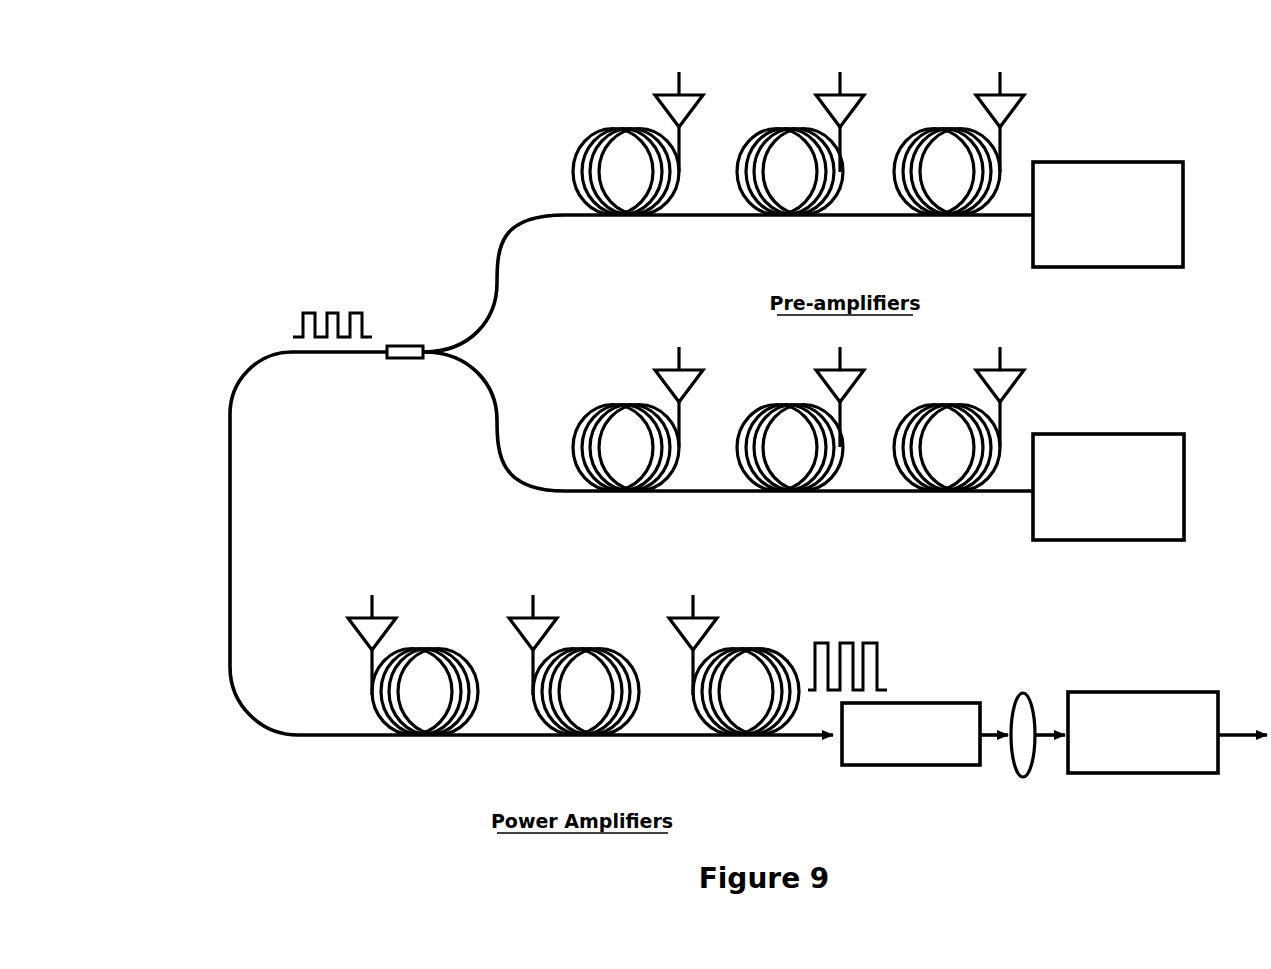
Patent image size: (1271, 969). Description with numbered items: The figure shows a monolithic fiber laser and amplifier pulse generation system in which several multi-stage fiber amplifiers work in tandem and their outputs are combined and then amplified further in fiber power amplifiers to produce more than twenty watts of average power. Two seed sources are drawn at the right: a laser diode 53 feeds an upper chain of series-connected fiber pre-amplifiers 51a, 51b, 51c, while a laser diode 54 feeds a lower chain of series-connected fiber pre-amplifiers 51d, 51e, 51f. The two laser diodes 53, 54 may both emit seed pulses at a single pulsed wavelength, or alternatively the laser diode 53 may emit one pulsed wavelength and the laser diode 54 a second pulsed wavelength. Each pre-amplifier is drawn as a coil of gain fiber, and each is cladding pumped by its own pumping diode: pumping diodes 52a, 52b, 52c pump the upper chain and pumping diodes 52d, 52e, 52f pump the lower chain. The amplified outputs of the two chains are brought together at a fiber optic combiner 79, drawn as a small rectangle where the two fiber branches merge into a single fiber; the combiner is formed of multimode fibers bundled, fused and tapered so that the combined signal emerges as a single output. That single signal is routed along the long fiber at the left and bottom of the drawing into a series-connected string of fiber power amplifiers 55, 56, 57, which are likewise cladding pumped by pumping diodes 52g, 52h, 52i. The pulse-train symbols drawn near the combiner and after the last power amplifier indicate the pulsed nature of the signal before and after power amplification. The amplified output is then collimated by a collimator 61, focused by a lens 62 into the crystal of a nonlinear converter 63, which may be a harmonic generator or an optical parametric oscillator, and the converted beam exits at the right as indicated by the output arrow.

The pre-amplifier 51a is at (624, 223).
The pre-amplifier 51b is at (785, 223).
The pre-amplifier 51c is at (945, 223).
The pre-amplifier 51d is at (624, 497).
The pre-amplifier 51e is at (785, 497).
The pre-amplifier 51f is at (945, 497).
The pumping diode 52a is at (695, 109).
The pumping diode 52b is at (856, 109).
The pumping diode 52c is at (1016, 109).
The pumping diode 52d is at (695, 382).
The pumping diode 52e is at (856, 382).
The pumping diode 52f is at (1016, 382).
The pumping diode 52g is at (356, 630).
The pumping diode 52h is at (517, 630).
The pumping diode 52i is at (677, 630).
The laser diode 53 is at (1114, 158).
The laser diode 54 is at (1114, 431).
The power amplifier 55 is at (430, 742).
The power amplifier 56 is at (590, 742).
The power amplifier 57 is at (750, 742).
The collimator 61 is at (922, 768).
The lens 62 is at (1023, 780).
The nonlinear converter 63 is at (1172, 776).
The fiber coupler / combiner 79 is at (411, 363).